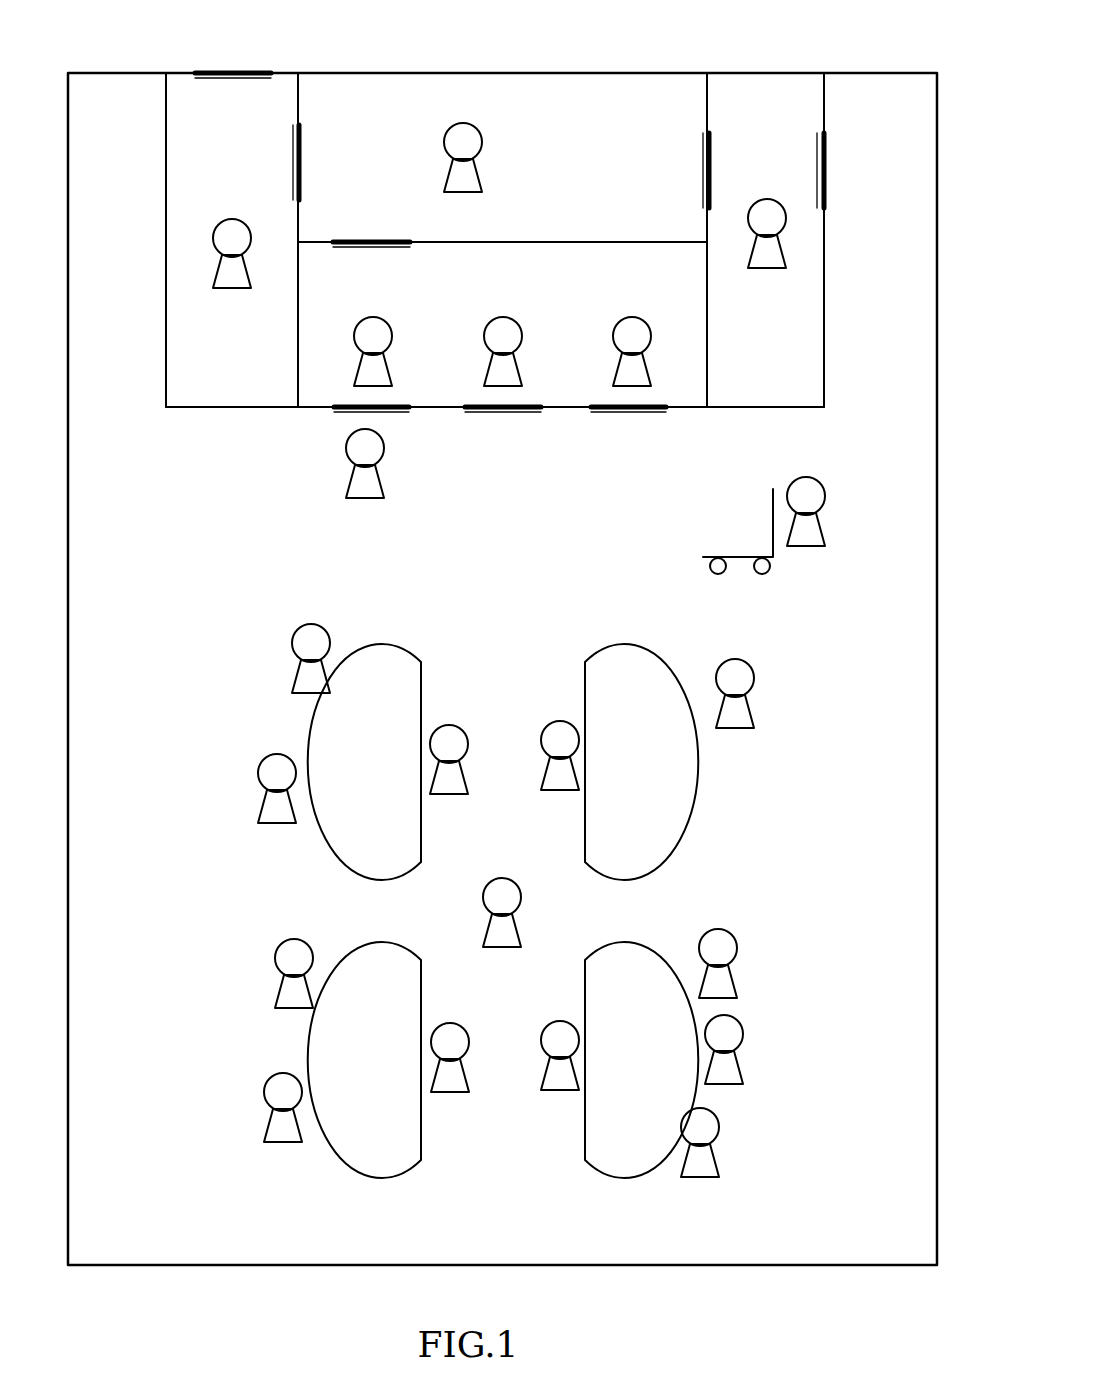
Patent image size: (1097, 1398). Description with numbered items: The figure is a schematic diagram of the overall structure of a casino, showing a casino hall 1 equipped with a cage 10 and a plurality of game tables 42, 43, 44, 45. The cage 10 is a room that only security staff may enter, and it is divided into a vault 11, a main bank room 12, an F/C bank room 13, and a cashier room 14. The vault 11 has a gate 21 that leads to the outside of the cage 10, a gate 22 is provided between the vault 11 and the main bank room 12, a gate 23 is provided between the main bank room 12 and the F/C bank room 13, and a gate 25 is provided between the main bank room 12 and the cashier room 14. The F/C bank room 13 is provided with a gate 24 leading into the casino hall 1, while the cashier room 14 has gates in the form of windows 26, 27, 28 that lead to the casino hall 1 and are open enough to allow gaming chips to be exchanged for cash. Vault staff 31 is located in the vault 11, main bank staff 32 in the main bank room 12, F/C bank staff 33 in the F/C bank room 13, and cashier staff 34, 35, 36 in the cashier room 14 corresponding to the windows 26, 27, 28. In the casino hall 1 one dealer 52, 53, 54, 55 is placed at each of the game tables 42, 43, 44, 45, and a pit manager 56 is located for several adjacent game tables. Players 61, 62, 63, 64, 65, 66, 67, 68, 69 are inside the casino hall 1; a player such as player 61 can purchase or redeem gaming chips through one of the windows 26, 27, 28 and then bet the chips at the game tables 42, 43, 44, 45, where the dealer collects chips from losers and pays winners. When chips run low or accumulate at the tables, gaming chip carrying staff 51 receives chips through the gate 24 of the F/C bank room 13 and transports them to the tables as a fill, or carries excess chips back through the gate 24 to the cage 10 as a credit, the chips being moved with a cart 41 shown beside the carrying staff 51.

The casino hall 1 is at (879, 73).
The cage 10 is at (215, 407).
The vault 11 is at (188, 180).
The main bank room 12 is at (556, 93).
The F/C bank room 13 is at (811, 338).
The cashier room 14 is at (681, 393).
The gate 21 is at (222, 70).
The gate 22 is at (293, 153).
The gate 23 is at (700, 168).
The gate 24 is at (826, 176).
The gate 25 is at (388, 238).
The window 26 is at (396, 415).
The window 27 is at (507, 415).
The window 28 is at (629, 415).
The vault staff 31 is at (232, 292).
The main bank staff 32 is at (478, 170).
The F/C bank staff 33 is at (765, 272).
The cashier staff 34 is at (390, 320).
The cashier staff 35 is at (513, 320).
The cashier staff 36 is at (641, 320).
The gaming chip carrying staff 41 is at (733, 555).
The game table 42 is at (397, 640).
The game table 43 is at (600, 642).
The game table 44 is at (367, 940).
The game table 45 is at (607, 1182).
The gaming chip carrying staff 51 is at (822, 528).
The dealer 52 is at (456, 722).
The dealer 53 is at (555, 718).
The dealer 54 is at (455, 1092).
The dealer 55 is at (555, 1090).
The pit manager 56 is at (503, 948).
The player 61 is at (350, 477).
The player 62 is at (296, 668).
The player 63 is at (262, 797).
The player 64 is at (279, 985).
The player 65 is at (268, 1124).
The player 66 is at (753, 706).
The player 67 is at (738, 975).
The player 68 is at (742, 1062).
The player 69 is at (719, 1156).